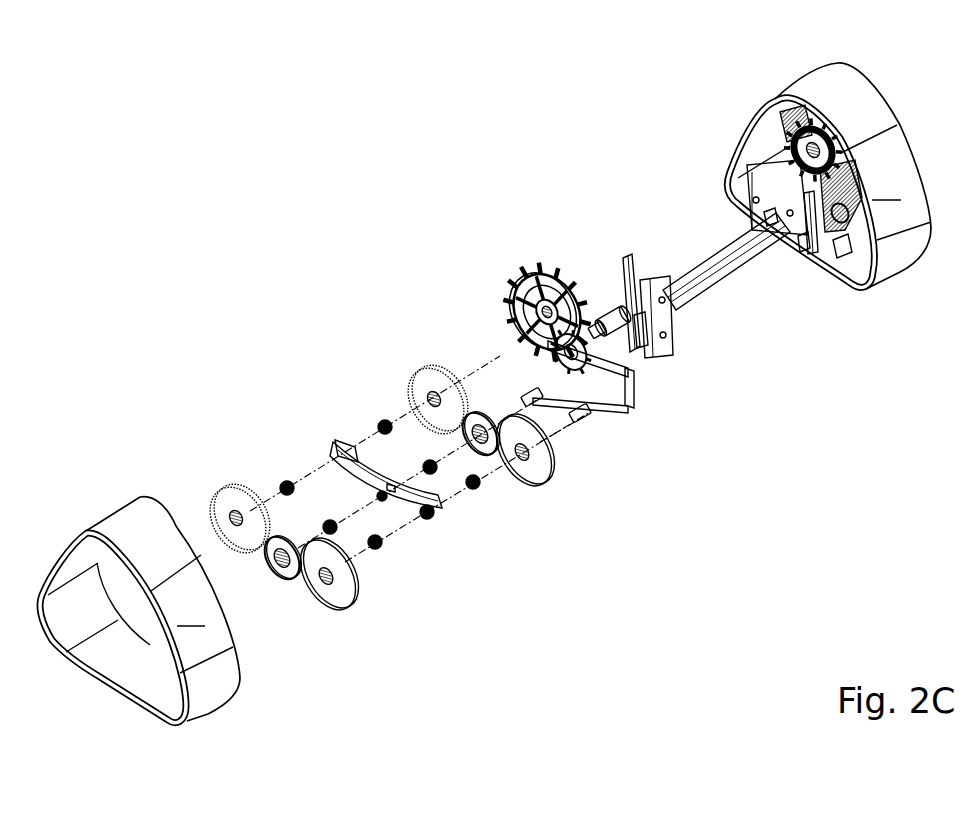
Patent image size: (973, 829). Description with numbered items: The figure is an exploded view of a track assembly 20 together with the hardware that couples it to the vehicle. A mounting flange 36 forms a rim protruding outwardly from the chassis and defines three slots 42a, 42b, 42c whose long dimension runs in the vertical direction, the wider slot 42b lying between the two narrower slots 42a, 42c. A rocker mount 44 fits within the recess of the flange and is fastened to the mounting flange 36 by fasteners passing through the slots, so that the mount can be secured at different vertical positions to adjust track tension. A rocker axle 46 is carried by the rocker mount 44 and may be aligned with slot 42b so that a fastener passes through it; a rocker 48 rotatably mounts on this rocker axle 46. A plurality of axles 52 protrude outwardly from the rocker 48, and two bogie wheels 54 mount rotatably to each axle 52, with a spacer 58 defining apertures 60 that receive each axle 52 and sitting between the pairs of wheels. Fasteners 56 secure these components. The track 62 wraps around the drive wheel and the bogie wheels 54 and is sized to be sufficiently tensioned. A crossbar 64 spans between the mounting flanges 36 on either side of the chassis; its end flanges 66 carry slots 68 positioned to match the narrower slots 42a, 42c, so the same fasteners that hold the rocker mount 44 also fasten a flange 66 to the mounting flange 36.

The track assembly 20 is at (477, 644).
The mounting flange 36 is at (777, 198).
The slot 42a is at (635, 285).
The slot 42b is at (658, 292).
The slot 42c is at (656, 323).
The rocker mount 44 is at (604, 310).
The rocker axle 46 is at (611, 330).
The rocker 48 is at (594, 380).
The axle 52 is at (531, 440).
The bogie wheel 54 is at (518, 445).
The fastener 56 is at (472, 478).
The spacer 58 is at (400, 508).
The aperture 60 is at (375, 540).
The track 62 is at (485, 393).
The crossbar 64 is at (722, 258).
The flange 66 is at (797, 246).
The slot 68 is at (768, 217).